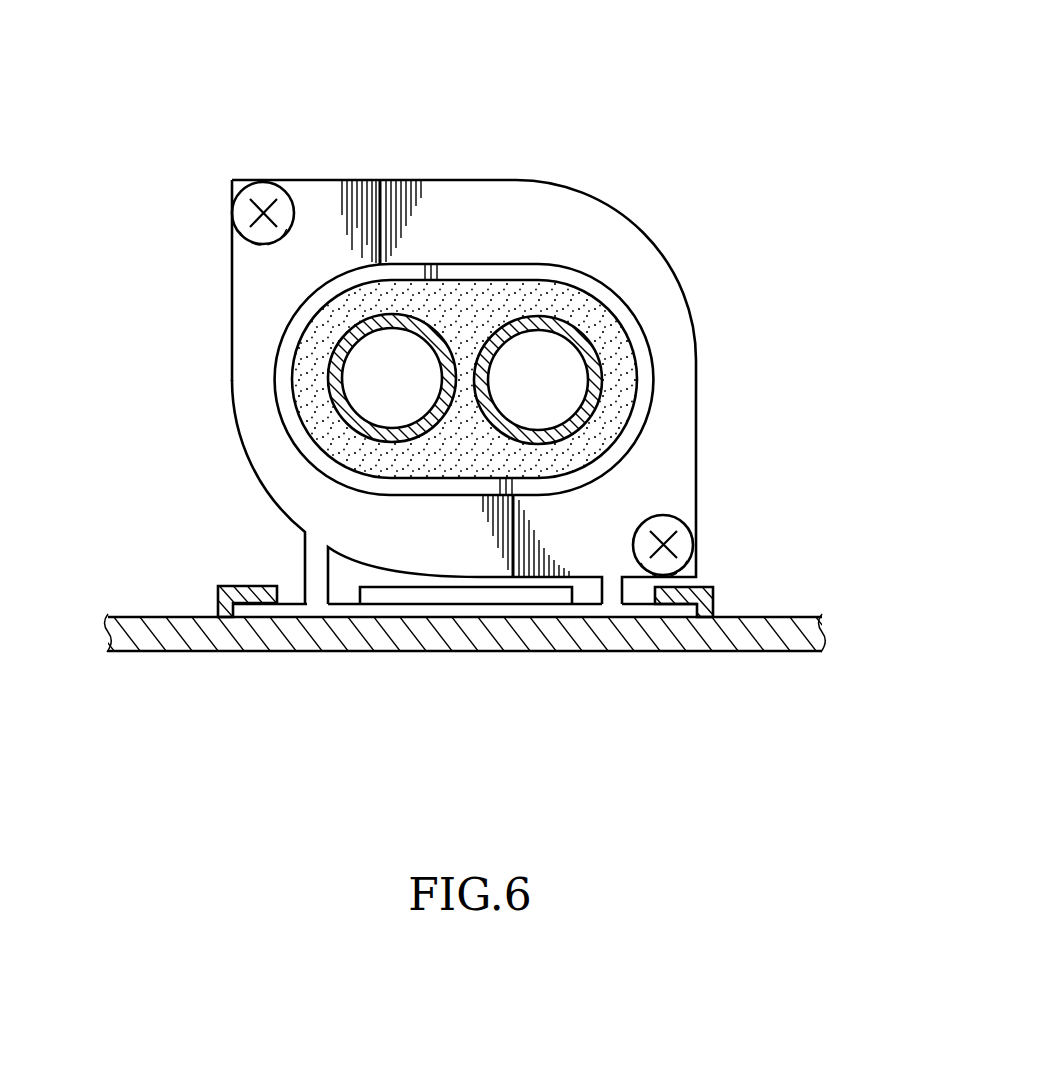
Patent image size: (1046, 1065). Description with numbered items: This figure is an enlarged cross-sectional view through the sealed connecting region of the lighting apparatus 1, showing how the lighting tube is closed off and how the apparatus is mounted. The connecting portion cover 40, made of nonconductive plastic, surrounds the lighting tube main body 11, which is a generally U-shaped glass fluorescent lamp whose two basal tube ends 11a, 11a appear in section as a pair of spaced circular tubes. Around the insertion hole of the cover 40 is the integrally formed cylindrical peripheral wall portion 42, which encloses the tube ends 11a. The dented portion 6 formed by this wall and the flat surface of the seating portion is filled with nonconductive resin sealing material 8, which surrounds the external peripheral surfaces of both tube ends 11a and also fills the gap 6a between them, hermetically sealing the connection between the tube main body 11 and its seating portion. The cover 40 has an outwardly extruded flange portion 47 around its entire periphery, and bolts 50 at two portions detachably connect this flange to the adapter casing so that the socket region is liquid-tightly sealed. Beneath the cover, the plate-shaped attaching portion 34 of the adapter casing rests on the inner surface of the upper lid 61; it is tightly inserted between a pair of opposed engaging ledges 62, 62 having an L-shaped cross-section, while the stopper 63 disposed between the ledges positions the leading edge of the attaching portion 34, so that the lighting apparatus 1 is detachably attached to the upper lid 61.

The lighting apparatus 1 is at (524, 106).
The connecting portion cover 40 is at (547, 218).
The flange portion 47 is at (258, 306).
The peripheral wall portion 42 is at (582, 282).
The dented portion 6 is at (624, 330).
The gap 6a is at (466, 395).
The sealing material 8 is at (457, 300).
The lighting tube main body 11 is at (603, 447).
The tube ends 11a is at (337, 385).
The bolts 50 is at (253, 183).
The attaching portion 34 is at (282, 613).
The stopper 63 is at (392, 596).
The engaging ledges 62 is at (250, 593).
The upper lid 61 is at (497, 643).